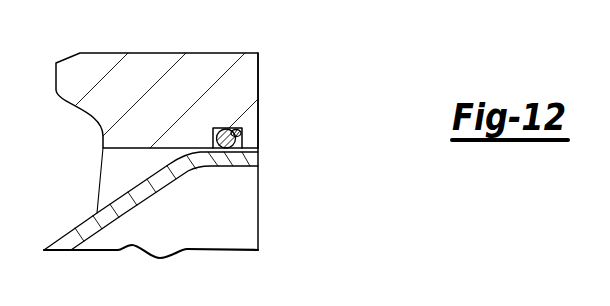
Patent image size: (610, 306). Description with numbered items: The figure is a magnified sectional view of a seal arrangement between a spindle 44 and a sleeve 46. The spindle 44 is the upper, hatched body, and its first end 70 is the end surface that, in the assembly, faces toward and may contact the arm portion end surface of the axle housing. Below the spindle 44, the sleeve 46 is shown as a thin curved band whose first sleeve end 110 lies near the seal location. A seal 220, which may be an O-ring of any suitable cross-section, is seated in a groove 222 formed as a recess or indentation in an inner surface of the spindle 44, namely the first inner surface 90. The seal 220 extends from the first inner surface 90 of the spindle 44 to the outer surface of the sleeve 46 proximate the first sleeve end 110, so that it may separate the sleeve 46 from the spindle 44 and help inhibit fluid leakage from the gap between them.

The spindle 44 is at (208, 53).
The first end 70 is at (259, 67).
The groove 222 is at (242, 130).
The seal 220 is at (228, 147).
The first sleeve end 110 is at (258, 161).
The first inner surface 90 is at (128, 148).
The sleeve 46 is at (146, 196).